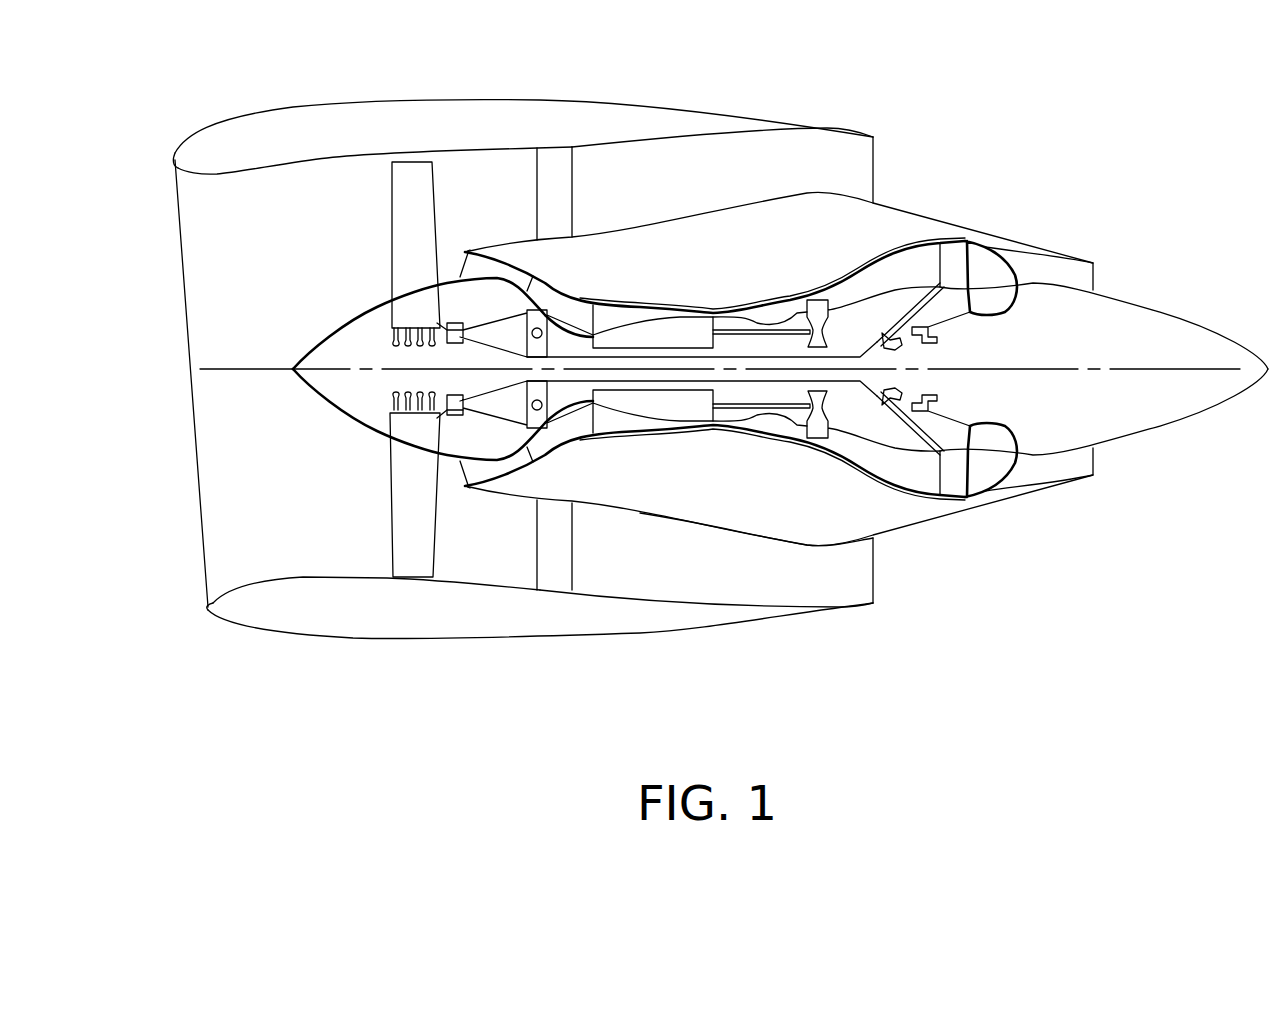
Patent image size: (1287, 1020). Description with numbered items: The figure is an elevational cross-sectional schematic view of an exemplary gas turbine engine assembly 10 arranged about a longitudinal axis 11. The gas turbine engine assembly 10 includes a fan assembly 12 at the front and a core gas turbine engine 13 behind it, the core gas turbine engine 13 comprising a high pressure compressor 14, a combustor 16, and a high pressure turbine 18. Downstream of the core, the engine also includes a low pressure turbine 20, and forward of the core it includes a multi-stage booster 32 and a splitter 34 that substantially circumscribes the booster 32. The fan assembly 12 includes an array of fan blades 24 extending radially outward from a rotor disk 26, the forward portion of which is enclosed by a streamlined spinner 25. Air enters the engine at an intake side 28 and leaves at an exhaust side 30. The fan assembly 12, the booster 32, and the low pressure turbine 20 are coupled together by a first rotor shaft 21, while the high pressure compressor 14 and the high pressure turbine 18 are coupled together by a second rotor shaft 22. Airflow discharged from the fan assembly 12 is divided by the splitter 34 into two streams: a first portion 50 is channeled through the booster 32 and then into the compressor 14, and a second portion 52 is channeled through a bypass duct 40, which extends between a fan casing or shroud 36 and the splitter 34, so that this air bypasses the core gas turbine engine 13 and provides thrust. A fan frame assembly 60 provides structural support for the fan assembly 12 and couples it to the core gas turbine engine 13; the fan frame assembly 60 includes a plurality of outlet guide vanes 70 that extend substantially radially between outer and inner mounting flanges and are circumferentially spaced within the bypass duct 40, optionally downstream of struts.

The gas turbine engine assembly 10 is at (757, 60).
The longitudinal axis 11 is at (263, 372).
The fan assembly 12 is at (410, 505).
The core gas turbine engine 13 is at (724, 550).
The high pressure compressor 14 is at (618, 317).
The combustor 16 is at (780, 313).
The high pressure turbine 18 is at (816, 440).
The low pressure turbine 20 is at (905, 257).
The first rotor shaft 21 is at (577, 430).
The second rotor shaft 22 is at (774, 336).
The fan blades 24 is at (407, 243).
The spinner 25 is at (341, 410).
The rotor disk 26 is at (390, 337).
The intake side 28 is at (257, 556).
The exhaust side 30 is at (848, 572).
The multi-stage booster 32 is at (530, 275).
The splitter 34 is at (477, 488).
The fan casing or shroud 36 is at (327, 167).
The bypass duct 40 is at (790, 176).
The first portion of airflow 50 is at (457, 264).
The second portion of airflow 52 is at (680, 188).
The fan frame assembly 60 is at (510, 181).
The outlet guide vanes 70 is at (560, 553).